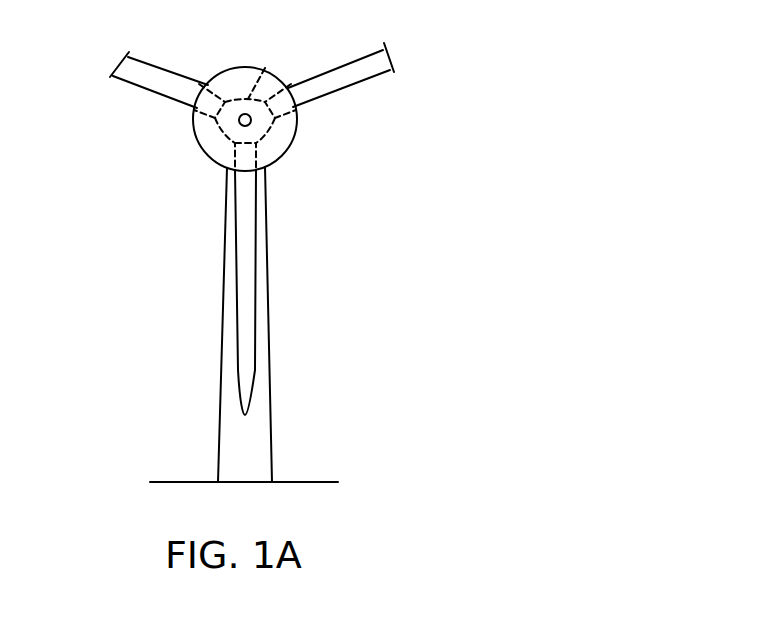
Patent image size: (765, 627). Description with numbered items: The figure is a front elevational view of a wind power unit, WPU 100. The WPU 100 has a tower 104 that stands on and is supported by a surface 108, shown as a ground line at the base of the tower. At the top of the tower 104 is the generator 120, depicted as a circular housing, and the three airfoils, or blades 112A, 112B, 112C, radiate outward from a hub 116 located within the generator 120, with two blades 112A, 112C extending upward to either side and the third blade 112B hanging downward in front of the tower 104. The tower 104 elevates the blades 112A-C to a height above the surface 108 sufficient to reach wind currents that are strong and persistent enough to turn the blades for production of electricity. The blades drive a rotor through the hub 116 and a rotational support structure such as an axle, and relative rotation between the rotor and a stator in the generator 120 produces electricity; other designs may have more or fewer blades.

The WPU 100 is at (130, 166).
The tower 104 is at (220, 377).
The surface 108 is at (160, 482).
The blade 112A is at (140, 58).
The blade 112B is at (255, 330).
The blade 112C is at (363, 53).
The hub 116 is at (265, 68).
The generator 120 is at (293, 138).